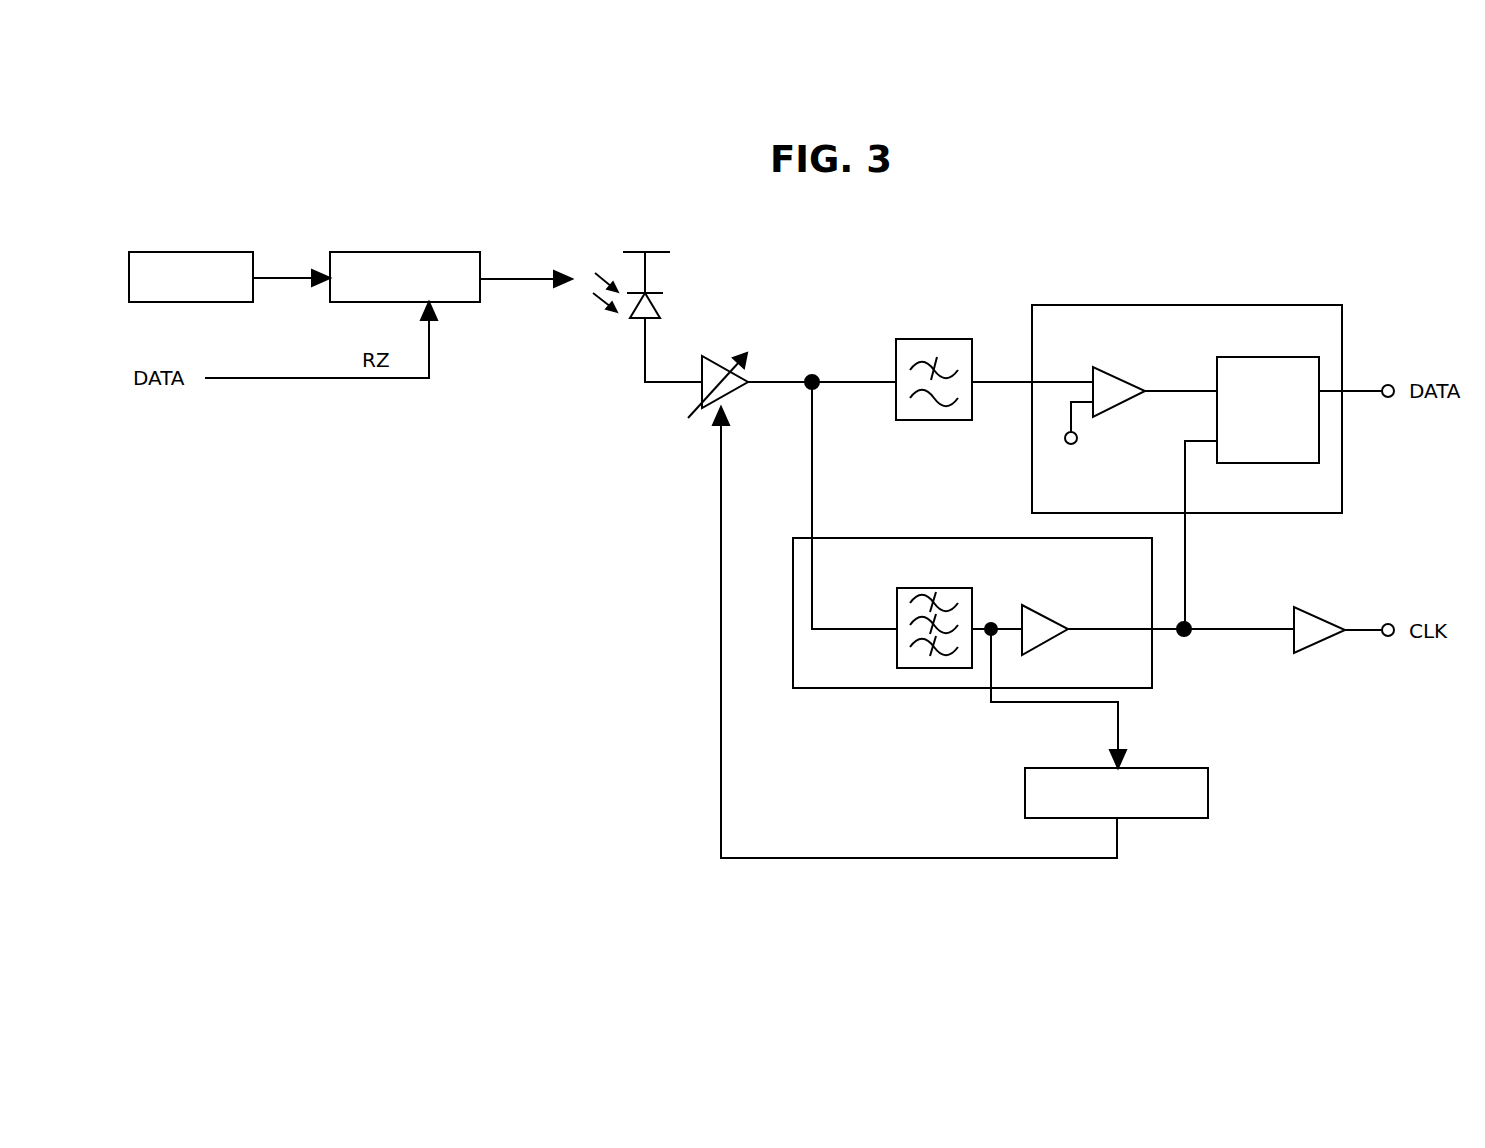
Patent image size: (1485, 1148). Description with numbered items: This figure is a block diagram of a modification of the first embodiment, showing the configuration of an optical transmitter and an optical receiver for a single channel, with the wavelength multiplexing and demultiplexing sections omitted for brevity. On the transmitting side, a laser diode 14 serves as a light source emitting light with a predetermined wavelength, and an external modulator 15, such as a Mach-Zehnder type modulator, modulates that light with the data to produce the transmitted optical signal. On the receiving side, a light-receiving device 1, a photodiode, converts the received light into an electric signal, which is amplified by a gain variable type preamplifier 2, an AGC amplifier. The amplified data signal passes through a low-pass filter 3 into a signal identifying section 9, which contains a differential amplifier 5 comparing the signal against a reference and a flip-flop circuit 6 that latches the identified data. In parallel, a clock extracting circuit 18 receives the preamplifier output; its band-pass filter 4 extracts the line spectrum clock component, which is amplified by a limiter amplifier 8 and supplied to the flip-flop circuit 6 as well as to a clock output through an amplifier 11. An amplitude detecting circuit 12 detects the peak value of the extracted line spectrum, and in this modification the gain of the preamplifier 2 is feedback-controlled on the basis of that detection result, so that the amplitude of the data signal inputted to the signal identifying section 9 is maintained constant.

The light-receiving device 1 is at (657, 302).
The gain variable type preamplifier 2 is at (735, 392).
The low-pass filter 3 is at (935, 339).
The band-pass filter 4 is at (938, 588).
The differential amplifier 5 is at (1118, 374).
The flip-flop circuit 6 is at (1258, 357).
The limiter amplifier 8 is at (1047, 617).
The signal identifying section 9 is at (1188, 305).
The optical amplifier 11 is at (1323, 613).
The amplitude detecting circuit 12 is at (1208, 793).
The laser diode 14 is at (192, 252).
The external modulator 15 is at (405, 252).
The clock extracting circuit 18 is at (975, 688).